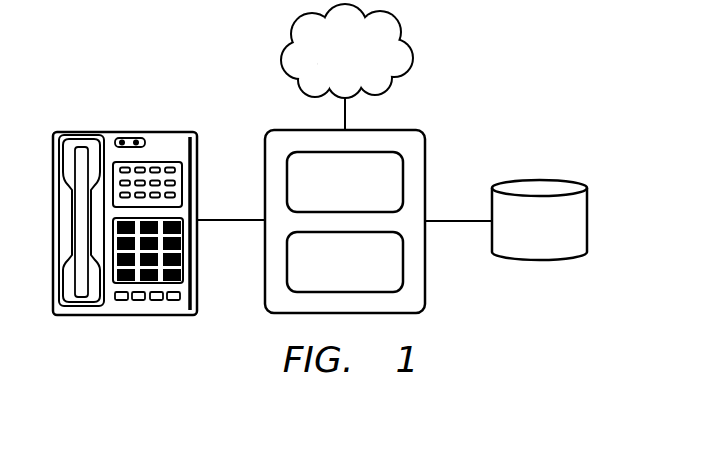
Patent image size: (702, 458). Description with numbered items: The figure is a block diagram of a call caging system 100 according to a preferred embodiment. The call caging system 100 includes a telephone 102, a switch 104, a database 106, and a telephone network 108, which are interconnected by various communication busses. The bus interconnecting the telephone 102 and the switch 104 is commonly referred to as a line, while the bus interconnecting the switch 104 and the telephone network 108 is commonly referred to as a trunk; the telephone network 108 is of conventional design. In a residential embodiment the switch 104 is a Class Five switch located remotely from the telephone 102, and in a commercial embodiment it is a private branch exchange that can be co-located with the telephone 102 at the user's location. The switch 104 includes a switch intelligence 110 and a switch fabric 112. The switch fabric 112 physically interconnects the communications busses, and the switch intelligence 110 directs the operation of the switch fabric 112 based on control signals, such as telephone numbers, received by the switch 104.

The call caging system 100 is at (488, 92).
The telephone 102 is at (125, 130).
The switch 104 is at (425, 282).
The database 106 is at (539, 186).
The telephone network 108 is at (324, 62).
The switch intelligence 110 is at (323, 192).
The switch fabric 112 is at (323, 272).